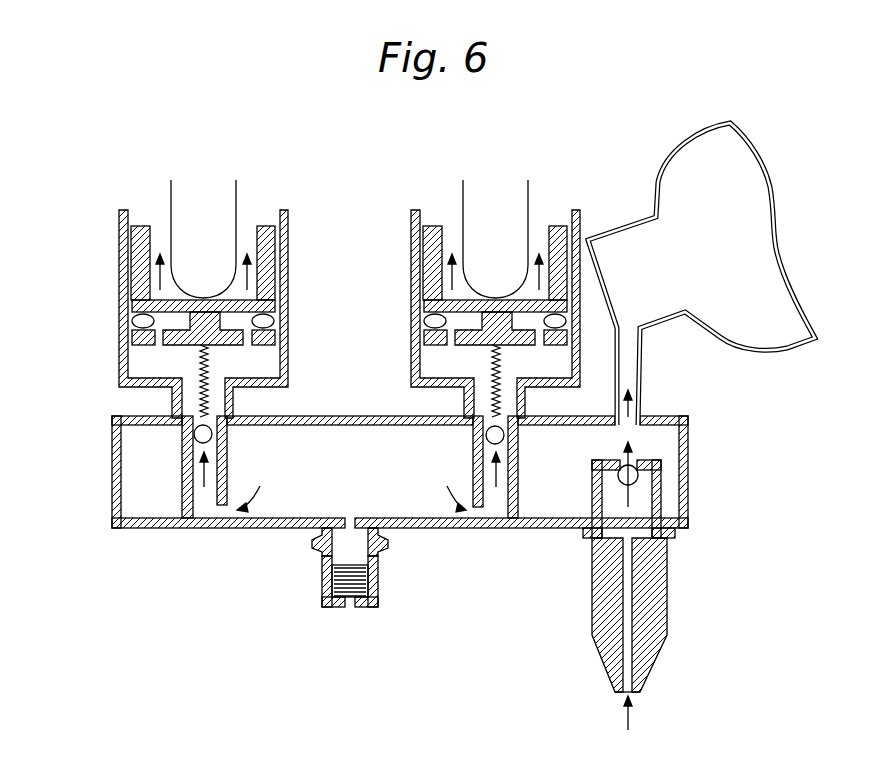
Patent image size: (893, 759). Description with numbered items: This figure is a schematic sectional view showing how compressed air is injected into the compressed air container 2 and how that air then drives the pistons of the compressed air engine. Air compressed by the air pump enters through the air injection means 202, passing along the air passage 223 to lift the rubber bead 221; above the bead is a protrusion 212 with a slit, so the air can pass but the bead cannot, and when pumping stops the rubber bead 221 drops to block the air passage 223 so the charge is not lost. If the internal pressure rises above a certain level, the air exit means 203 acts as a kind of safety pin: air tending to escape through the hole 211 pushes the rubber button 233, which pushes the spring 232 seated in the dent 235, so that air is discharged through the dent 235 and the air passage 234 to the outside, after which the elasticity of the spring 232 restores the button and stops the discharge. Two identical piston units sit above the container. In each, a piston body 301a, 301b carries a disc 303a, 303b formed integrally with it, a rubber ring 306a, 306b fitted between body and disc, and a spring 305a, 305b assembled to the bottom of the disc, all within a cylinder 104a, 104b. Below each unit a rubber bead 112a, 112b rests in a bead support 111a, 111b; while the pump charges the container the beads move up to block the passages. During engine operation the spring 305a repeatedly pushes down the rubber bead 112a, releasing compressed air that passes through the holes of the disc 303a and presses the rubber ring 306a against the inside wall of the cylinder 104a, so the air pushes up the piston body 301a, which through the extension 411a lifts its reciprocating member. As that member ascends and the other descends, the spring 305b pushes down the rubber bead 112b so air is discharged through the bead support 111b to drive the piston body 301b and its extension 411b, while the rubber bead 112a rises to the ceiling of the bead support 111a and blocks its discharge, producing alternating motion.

The compressed air container 2 is at (660, 178).
The extension 411a is at (172, 197).
The extension 411b is at (463, 197).
The piston body 301a is at (132, 245).
The piston body 301b is at (424, 245).
The cylinder 104a is at (128, 283).
The cylinder 104b is at (420, 283).
The rubber ring 306a is at (136, 320).
The rubber ring 306b is at (430, 320).
The disc 303a is at (128, 355).
The disc 303b is at (420, 355).
The spring 305a is at (210, 396).
The spring 305b is at (500, 363).
The rubber bead 112a is at (185, 448).
The rubber bead 112b is at (518, 448).
The bead support 111a is at (228, 462).
The bead support 111b is at (473, 462).
The protrusion 212 is at (660, 463).
The rubber bead 221 is at (641, 474).
The air injection means 202 is at (667, 608).
The air passage 223 is at (648, 672).
The air exit means 203 is at (378, 575).
The hole 211 is at (316, 537).
The rubber button 233 is at (384, 540).
The spring 232 is at (328, 578).
The air passage 234 is at (348, 600).
The dent 235 is at (372, 598).